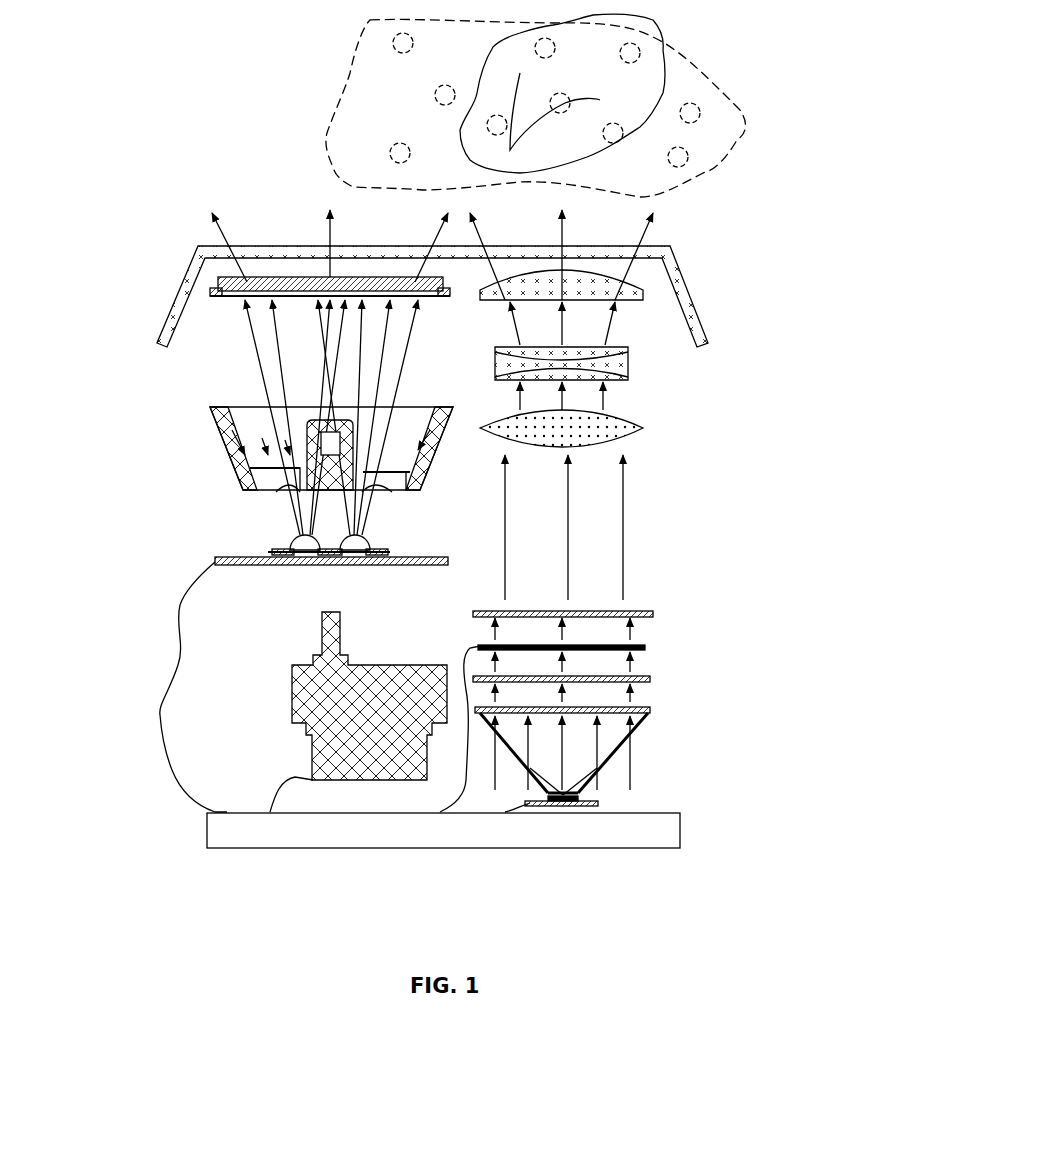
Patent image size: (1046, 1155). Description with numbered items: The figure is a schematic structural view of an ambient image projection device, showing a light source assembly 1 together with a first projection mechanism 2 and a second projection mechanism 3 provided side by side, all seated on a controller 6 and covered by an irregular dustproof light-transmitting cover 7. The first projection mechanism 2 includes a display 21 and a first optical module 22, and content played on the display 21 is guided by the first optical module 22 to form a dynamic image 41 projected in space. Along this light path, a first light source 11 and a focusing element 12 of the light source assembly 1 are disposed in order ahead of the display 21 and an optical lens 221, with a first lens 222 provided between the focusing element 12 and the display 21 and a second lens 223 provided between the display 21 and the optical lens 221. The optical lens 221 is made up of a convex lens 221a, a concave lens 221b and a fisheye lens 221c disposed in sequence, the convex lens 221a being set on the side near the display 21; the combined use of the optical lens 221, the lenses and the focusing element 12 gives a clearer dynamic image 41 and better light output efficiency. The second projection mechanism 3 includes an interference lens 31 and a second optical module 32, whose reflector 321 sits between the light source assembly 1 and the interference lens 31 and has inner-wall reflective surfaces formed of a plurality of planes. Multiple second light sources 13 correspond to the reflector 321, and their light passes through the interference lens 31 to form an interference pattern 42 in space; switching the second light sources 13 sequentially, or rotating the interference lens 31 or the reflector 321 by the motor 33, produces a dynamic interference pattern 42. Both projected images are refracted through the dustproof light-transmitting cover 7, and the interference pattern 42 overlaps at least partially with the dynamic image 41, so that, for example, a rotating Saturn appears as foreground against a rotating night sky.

The light source assembly 1 is at (378, 590).
The first light source 11 is at (523, 802).
The focusing element 12 is at (547, 792).
The second light source 13 is at (352, 540).
The first projection mechanism 2 is at (842, 508).
The display 21 is at (648, 648).
The first optical module 22 is at (790, 383).
The optical lens 221 is at (735, 397).
The convex lens 221a is at (610, 437).
The concave lens 221b is at (623, 372).
The fisheye lens 221c is at (630, 297).
The first lens 222 is at (650, 678).
The second lens 223 is at (655, 612).
The second projection mechanism 3 is at (85, 405).
The interference lens 31 is at (225, 300).
The second optical module 32 is at (276, 455).
The reflector 321 is at (225, 468).
The motor 33 is at (317, 747).
The dynamic image 41 is at (590, 92).
The interference pattern 42 is at (440, 97).
The controller 6 is at (438, 833).
The dustproof light-transmitting cover 7 is at (190, 262).